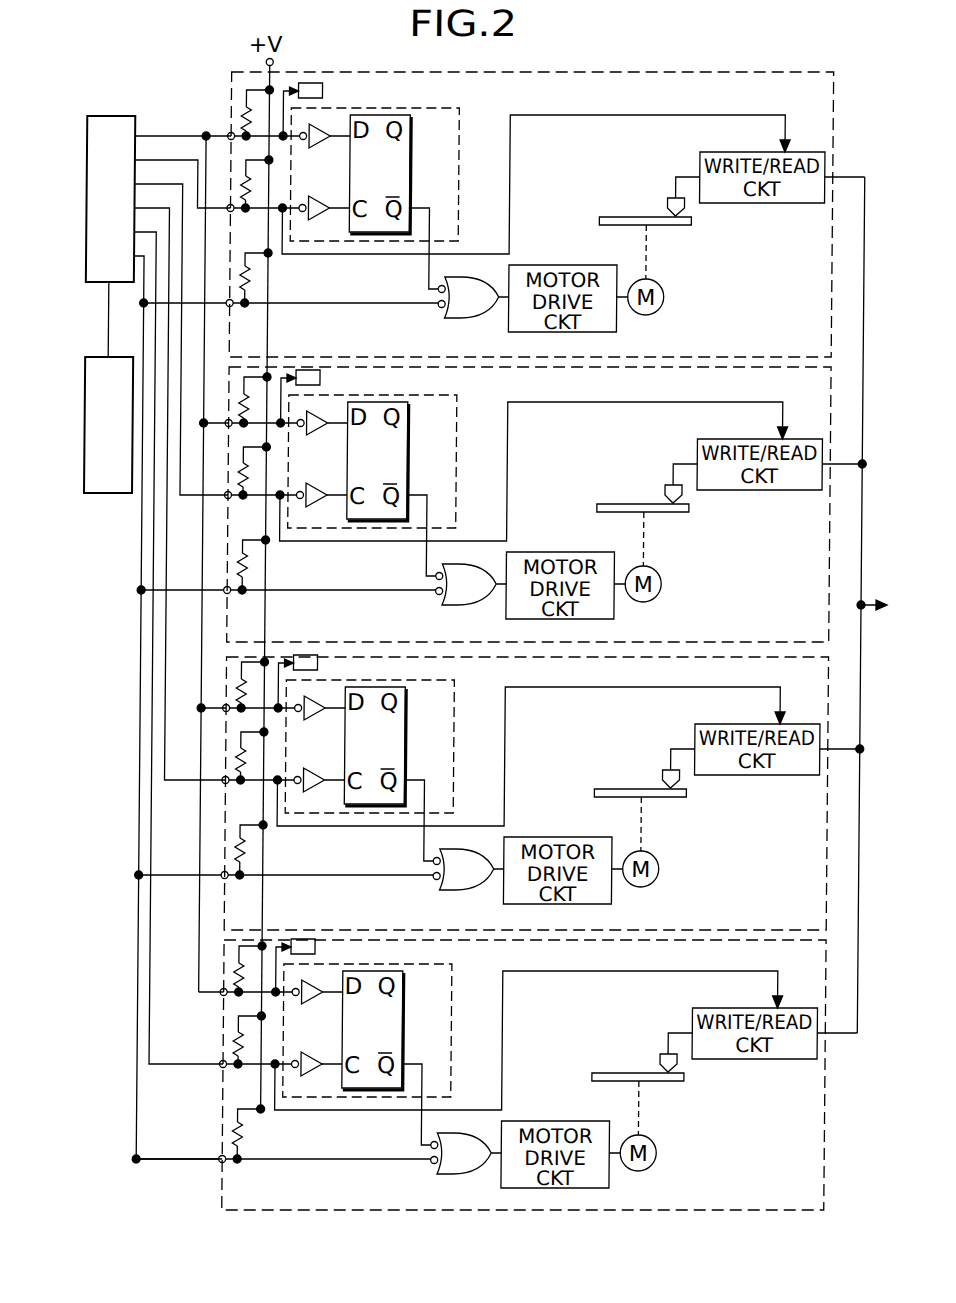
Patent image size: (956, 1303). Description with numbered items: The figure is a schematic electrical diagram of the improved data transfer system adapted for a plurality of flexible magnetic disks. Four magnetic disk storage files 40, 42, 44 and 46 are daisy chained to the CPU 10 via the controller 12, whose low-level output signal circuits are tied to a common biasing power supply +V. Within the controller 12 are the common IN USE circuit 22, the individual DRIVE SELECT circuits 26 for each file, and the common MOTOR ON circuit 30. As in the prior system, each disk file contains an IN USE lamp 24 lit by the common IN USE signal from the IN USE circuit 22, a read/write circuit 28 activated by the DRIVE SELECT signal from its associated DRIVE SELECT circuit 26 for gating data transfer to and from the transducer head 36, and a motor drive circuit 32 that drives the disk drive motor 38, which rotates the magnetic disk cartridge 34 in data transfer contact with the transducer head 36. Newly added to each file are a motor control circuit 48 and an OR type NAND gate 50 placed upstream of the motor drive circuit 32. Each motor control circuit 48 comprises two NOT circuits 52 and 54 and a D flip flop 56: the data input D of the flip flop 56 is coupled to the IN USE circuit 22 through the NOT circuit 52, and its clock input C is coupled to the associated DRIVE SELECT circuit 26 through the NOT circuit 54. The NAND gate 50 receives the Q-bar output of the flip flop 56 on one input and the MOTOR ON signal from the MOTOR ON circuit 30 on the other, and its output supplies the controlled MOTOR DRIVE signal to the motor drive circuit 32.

The CPU 10 is at (86, 418).
The controller 12 is at (86, 158).
The IN USE circuit 22 is at (185, 133).
The IN USE lamp 24 is at (327, 521).
The DRIVE SELECT circuit 26 is at (187, 161).
The read/write circuit 28 is at (758, 630).
The MOTOR ON circuit 30 is at (144, 289).
The motor drive circuit 32 is at (559, 707).
The magnetic disk cartridge 34 is at (665, 662).
The transducer head 36 is at (650, 624).
The disk drive motor 38 is at (661, 725).
The magnetic disk storage file 40 is at (835, 140).
The magnetic disk storage file 42 is at (828, 552).
The magnetic disk storage file 44 is at (828, 826).
The magnetic disk storage file 46 is at (825, 1097).
The motor control circuit 48 is at (396, 602).
The OR type NAND gate 50 is at (468, 745).
The NOT circuit 52 is at (320, 578).
The NOT circuit 54 is at (319, 623).
The D flip flop 56 is at (396, 602).